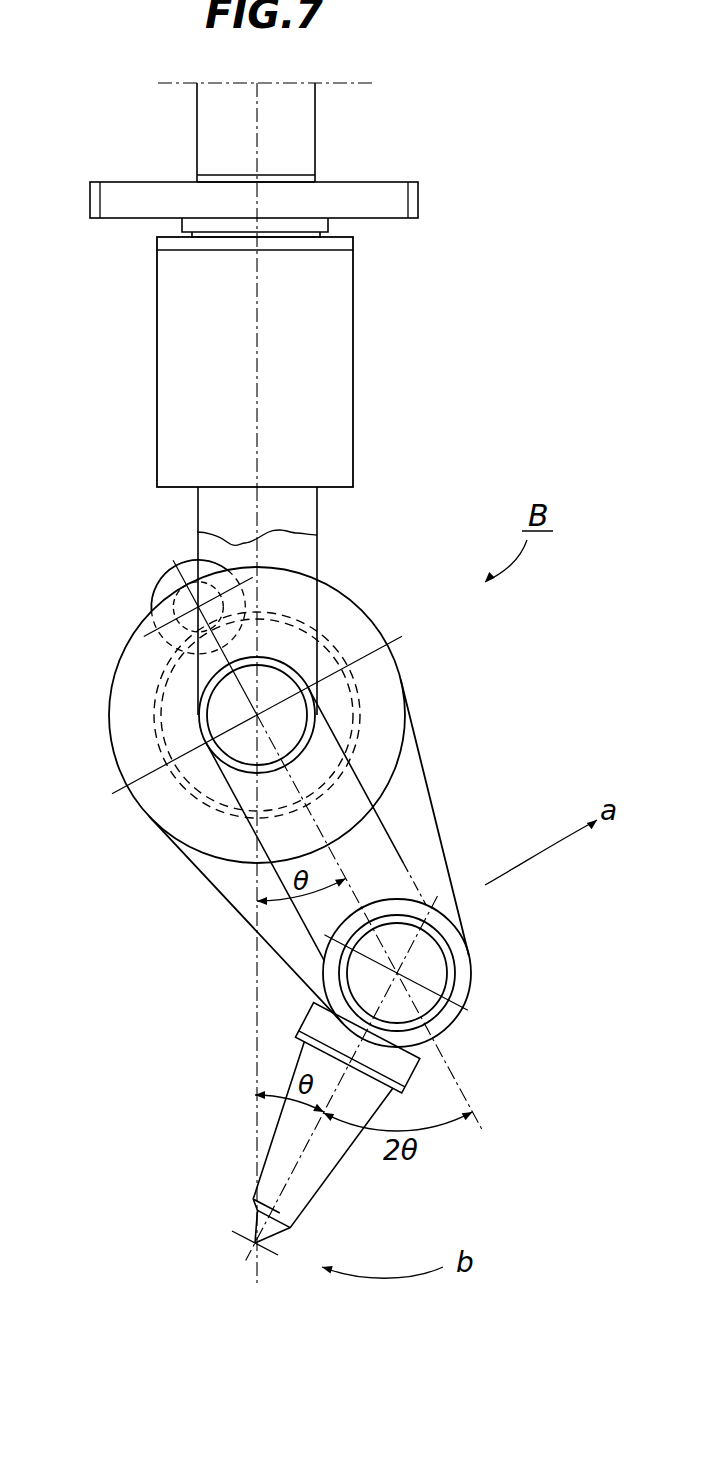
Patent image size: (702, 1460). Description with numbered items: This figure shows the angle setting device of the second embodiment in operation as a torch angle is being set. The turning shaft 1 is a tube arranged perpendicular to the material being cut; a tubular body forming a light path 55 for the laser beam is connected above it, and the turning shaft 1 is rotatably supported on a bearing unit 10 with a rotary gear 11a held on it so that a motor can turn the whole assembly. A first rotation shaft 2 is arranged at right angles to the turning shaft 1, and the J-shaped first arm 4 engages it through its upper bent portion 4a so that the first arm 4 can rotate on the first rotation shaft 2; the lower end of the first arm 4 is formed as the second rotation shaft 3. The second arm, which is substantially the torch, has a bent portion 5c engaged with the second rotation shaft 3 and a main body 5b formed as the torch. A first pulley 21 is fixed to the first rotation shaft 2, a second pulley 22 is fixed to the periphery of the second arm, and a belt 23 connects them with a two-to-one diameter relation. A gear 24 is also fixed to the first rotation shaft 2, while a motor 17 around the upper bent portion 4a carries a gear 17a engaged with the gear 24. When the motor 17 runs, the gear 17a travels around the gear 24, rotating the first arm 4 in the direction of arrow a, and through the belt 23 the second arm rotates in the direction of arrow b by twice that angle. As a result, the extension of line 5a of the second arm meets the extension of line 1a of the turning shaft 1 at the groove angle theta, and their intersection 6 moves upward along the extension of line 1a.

The light path 55 is at (305, 145).
The rotary gear 11a is at (393, 197).
The bearing unit 10 is at (338, 345).
The extension of line of the turning shaft 1a is at (257, 424).
The turning shaft 1 is at (293, 507).
The first pulley 21 is at (380, 597).
The motor 17 is at (168, 578).
The gear 17a is at (152, 600).
The first rotation shaft 2 is at (359, 715).
The upper bent portion 4a is at (313, 717).
The gear 24 is at (165, 805).
The belt 23 is at (422, 767).
The first arm 4 is at (393, 840).
The second pulley 22 is at (463, 967).
The second rotation shaft 3 is at (455, 975).
The bent portion 5c is at (448, 988).
The extension of line of the second arm 5a is at (317, 1137).
The main body (torch) 5b is at (303, 1195).
The intersection 6 is at (253, 1243).